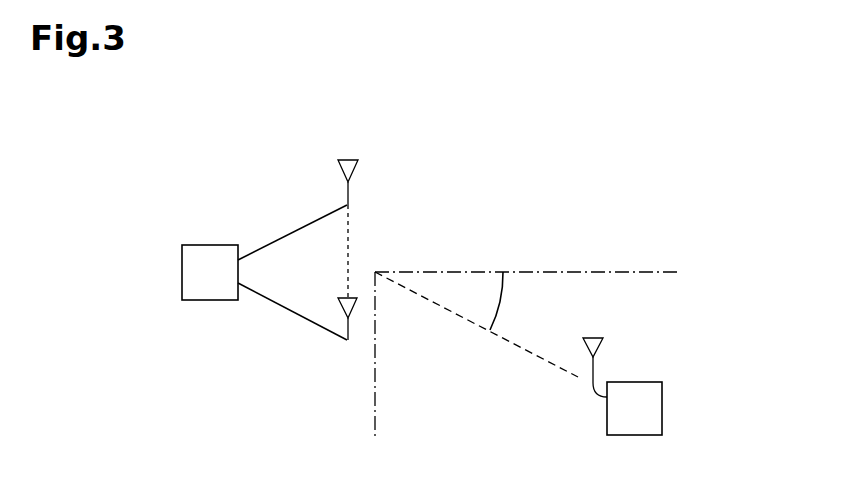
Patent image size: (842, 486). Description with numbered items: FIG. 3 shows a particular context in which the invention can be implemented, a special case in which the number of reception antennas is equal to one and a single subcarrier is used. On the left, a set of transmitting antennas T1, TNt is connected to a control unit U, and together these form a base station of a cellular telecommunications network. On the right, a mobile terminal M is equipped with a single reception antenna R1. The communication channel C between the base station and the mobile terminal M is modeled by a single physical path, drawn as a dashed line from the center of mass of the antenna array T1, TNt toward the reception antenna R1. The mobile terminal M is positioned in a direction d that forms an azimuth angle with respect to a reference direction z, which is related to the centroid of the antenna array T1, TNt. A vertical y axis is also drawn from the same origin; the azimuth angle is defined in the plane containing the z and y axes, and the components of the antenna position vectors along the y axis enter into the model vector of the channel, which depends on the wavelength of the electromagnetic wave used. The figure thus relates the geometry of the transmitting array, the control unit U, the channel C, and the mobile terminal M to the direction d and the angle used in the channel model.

The control unit U is at (220, 245).
The transmitting antenna T1 is at (338, 168).
The transmitting antenna TNt is at (350, 340).
The communication channel C is at (475, 219).
The reception antenna R1 is at (601, 347).
The mobile terminal M is at (662, 395).
The reference direction z is at (526, 258).
The y axis y is at (386, 354).
The direction d is at (476, 331).